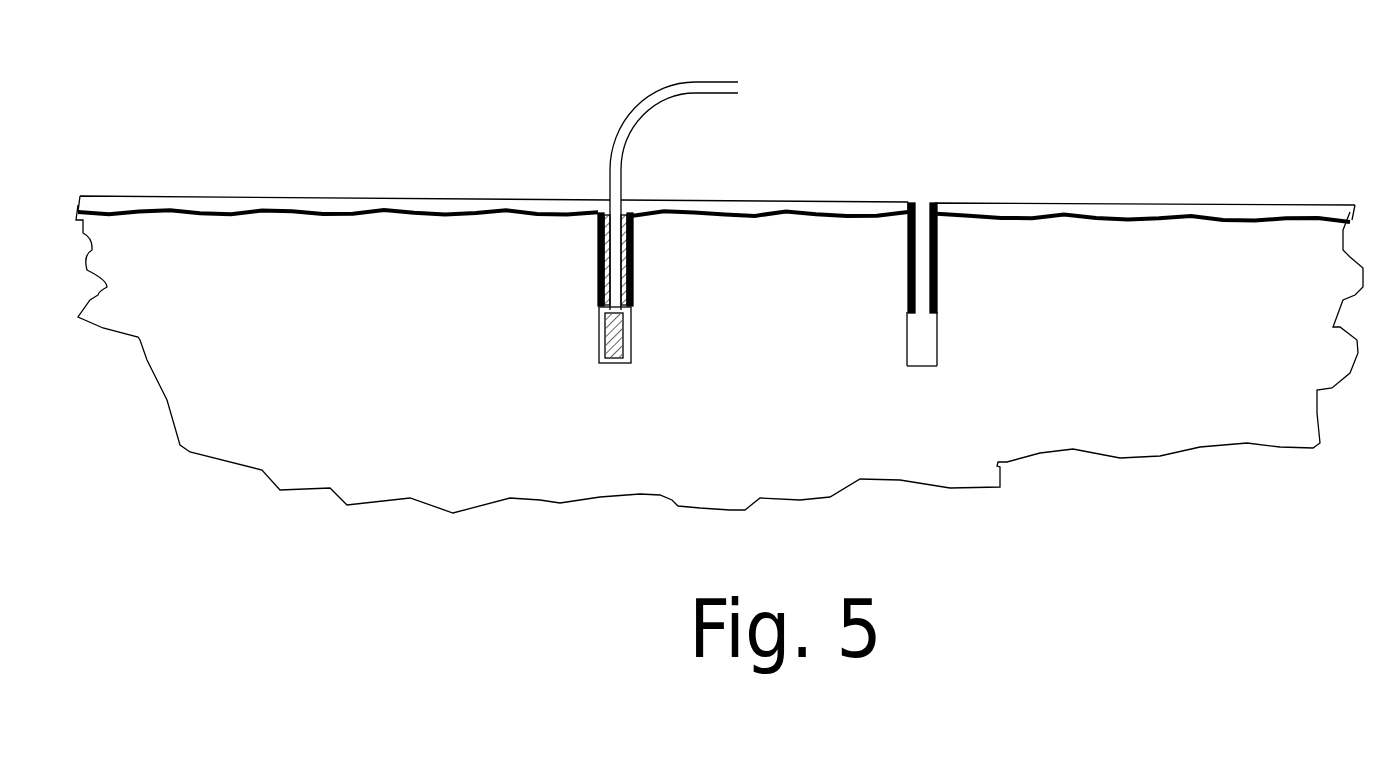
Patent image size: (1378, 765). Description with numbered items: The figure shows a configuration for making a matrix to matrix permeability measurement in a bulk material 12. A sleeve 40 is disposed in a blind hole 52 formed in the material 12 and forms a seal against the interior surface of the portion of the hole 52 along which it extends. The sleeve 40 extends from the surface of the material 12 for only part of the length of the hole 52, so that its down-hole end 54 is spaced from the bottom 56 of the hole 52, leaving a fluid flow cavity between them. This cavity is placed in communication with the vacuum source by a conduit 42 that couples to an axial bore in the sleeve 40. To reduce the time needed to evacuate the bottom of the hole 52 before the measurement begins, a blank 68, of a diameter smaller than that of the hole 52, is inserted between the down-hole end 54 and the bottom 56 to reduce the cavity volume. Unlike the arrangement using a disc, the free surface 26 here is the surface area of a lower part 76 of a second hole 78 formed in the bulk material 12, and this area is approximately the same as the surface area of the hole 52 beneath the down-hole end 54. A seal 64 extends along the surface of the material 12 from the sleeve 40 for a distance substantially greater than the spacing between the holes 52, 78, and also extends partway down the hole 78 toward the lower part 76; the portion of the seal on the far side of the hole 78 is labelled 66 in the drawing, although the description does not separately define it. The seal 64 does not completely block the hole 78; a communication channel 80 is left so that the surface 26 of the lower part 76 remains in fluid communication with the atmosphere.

The bulk material 12 is at (719, 359).
The free surface 26 is at (937, 343).
The sleeve 40 is at (595, 212).
The conduit 42 is at (638, 110).
The blind hole 52 is at (597, 307).
The down-hole end 54 is at (592, 363).
The bottom 56 is at (615, 363).
The seal 64 is at (325, 193).
The surface layer 66 is at (1042, 213).
The blank 68 is at (615, 342).
The lower part 76 is at (922, 353).
The hole 78 is at (905, 308).
The communication channel 80 is at (923, 200).